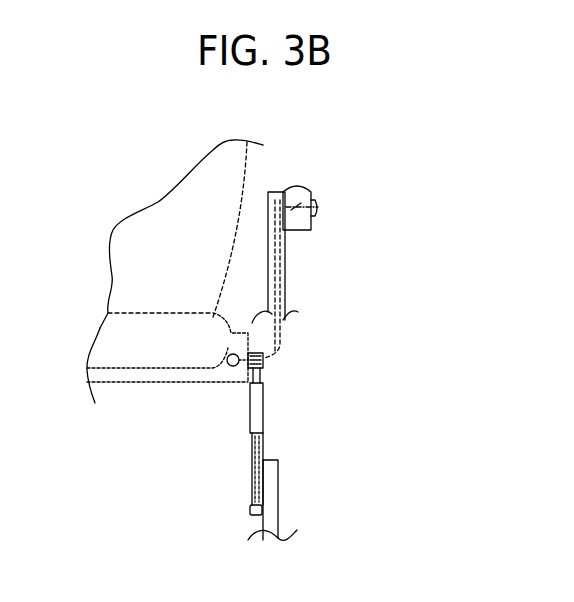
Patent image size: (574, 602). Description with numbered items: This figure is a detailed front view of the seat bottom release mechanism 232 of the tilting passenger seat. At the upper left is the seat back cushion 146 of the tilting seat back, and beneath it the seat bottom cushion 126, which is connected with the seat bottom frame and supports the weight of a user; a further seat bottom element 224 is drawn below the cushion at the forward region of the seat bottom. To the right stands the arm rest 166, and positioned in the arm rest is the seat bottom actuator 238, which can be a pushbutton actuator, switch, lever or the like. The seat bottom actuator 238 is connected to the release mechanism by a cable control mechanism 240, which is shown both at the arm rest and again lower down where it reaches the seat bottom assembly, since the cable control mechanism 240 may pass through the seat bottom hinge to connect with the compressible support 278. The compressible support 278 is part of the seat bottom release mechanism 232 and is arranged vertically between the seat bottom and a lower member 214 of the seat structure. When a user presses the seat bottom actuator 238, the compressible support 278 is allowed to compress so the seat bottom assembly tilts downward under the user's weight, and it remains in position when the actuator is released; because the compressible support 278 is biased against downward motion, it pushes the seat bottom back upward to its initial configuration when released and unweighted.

The seat back cushion 146 is at (170, 200).
The seat bottom cushion 126 is at (187, 313).
The seat pan 224 is at (162, 375).
The arm rest 166 is at (297, 187).
The cable control mechanism 240 is at (312, 195).
The seat bottom actuator 238 is at (318, 208).
The seat bottom release mechanism 232 is at (282, 397).
The compressible support 278 is at (250, 433).
The frame post 214 is at (282, 492).